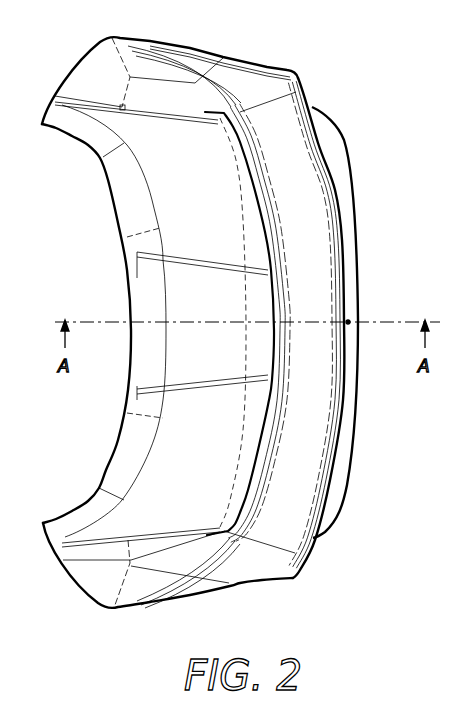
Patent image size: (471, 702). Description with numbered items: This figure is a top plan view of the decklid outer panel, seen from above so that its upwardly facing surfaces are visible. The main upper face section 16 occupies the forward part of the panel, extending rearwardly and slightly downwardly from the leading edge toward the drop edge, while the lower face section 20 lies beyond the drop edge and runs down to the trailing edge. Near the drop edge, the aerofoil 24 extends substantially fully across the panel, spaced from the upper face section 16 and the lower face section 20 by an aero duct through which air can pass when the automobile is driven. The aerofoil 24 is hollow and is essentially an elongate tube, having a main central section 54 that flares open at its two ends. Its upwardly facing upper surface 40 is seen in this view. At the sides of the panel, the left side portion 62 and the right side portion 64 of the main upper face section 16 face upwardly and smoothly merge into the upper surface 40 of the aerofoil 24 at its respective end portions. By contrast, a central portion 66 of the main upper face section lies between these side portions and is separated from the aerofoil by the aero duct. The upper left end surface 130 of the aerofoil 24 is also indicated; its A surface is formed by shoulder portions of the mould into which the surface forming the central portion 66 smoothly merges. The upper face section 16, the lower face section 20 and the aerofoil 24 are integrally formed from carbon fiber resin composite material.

The main upper face section 16 is at (192, 238).
The lower face section 20 is at (337, 143).
The aerofoil 24 is at (320, 220).
The upper surface 40 is at (322, 265).
The main central section 54 is at (322, 400).
The left side portion 62 is at (153, 575).
The right side portion 64 is at (100, 60).
The central portion 66 is at (162, 292).
The upper left end surface 130 is at (263, 560).